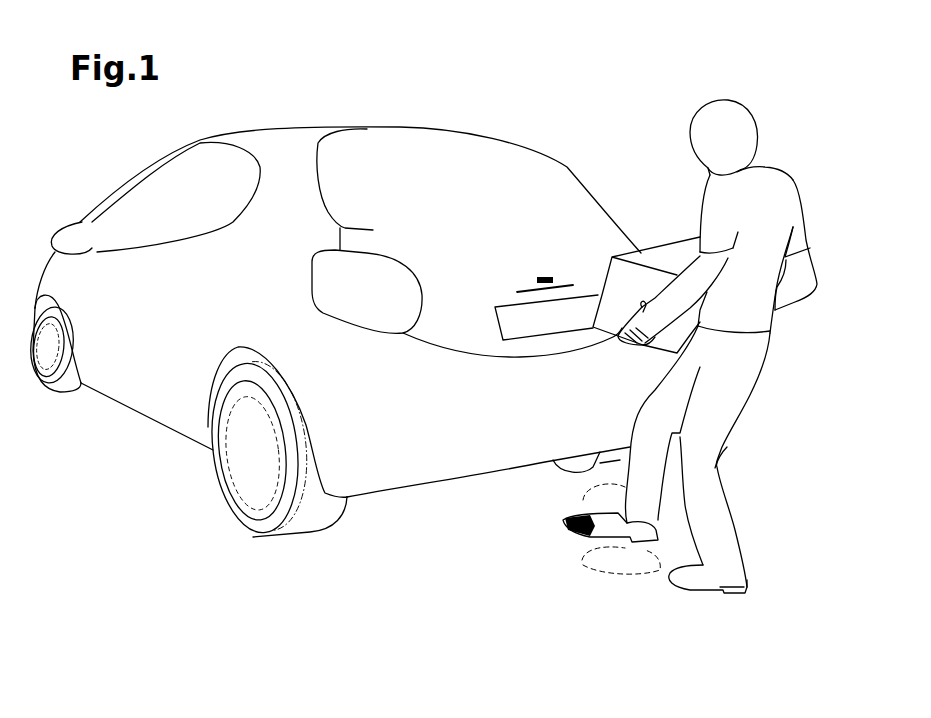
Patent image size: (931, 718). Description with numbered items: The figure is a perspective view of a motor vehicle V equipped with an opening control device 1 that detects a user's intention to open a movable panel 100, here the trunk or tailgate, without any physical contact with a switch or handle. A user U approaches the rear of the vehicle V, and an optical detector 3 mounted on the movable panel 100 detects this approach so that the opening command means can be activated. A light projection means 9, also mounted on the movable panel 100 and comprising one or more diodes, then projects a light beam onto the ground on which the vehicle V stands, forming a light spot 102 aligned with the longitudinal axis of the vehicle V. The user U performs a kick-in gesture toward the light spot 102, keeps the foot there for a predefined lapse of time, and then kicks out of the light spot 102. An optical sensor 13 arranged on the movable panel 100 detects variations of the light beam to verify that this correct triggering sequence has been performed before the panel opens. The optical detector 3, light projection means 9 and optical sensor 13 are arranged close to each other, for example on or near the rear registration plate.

The motor vehicle V is at (333, 95).
The user U is at (780, 163).
The opening control device 1 is at (545, 256).
The optical detector 3 is at (553, 290).
The light projection means 9 is at (548, 293).
The optical sensor 13 is at (540, 274).
The movable panel 100 is at (452, 323).
The light spot 102 is at (563, 520).